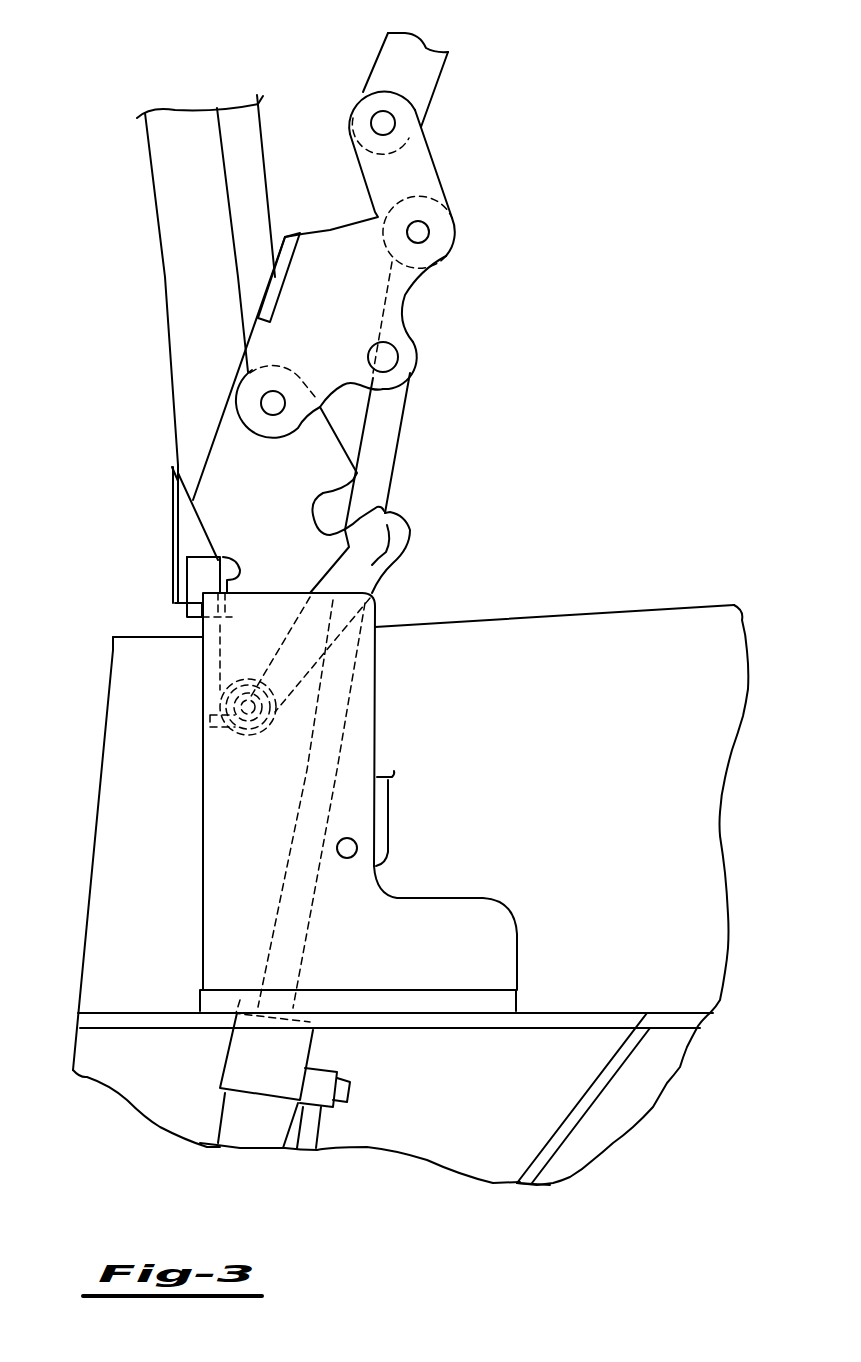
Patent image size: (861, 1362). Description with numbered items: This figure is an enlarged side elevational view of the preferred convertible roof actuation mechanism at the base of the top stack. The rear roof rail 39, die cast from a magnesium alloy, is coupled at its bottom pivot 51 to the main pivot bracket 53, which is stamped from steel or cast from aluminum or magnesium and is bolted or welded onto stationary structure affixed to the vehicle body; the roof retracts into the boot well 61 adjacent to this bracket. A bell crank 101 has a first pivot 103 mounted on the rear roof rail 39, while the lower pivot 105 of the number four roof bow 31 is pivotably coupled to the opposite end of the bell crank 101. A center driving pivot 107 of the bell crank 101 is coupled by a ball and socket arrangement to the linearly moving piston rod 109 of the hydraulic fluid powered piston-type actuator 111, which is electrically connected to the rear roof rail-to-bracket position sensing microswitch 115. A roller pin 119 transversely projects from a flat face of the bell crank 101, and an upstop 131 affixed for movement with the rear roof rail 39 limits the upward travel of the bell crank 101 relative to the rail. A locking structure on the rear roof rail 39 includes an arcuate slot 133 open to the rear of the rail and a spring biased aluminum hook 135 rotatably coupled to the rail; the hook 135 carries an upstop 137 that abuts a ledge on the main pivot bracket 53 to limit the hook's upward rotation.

The number four roof bow 31 is at (440, 80).
The rear roof rail 39 is at (180, 168).
The bottom pivot 51 is at (204, 688).
The main pivot bracket 53 is at (222, 827).
The boot well 61 is at (610, 635).
The bell crank 101 is at (336, 247).
The first pivot 103 is at (260, 402).
The lower pivot 105 is at (385, 123).
The center driving pivot 107 is at (418, 232).
The piston rod 109 is at (412, 308).
The piston-type actuator 111 is at (237, 1133).
The rear roof rail-to-bracket position sensing microswitch 115 is at (198, 583).
The roller pin 119 is at (397, 353).
The upstop 131 is at (273, 283).
The arcuate slot 133 is at (383, 485).
The hook 135 is at (378, 570).
The upstop 137 is at (220, 710).